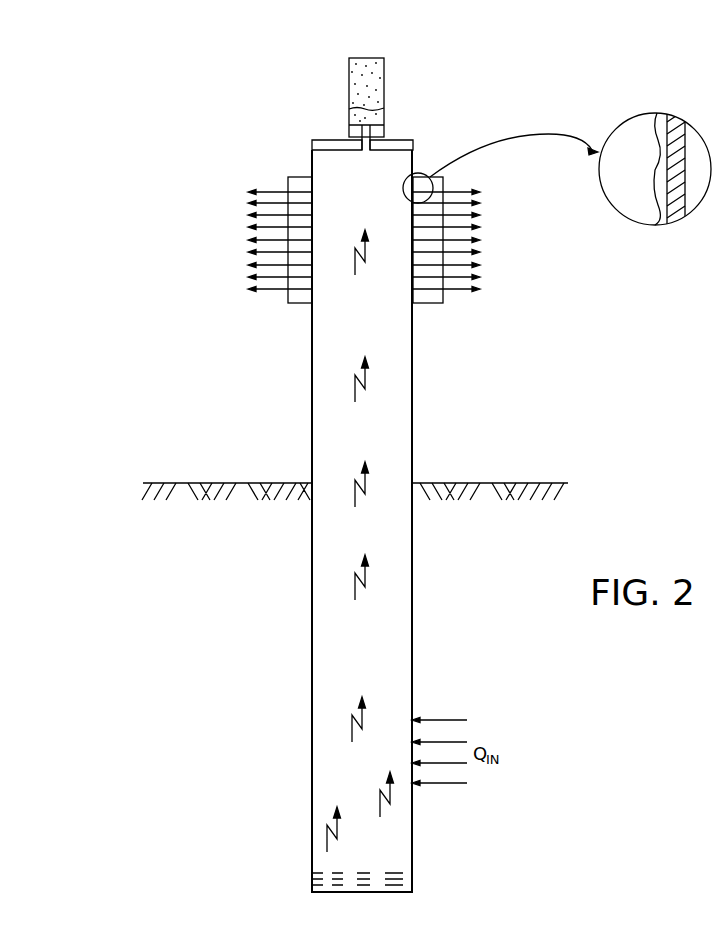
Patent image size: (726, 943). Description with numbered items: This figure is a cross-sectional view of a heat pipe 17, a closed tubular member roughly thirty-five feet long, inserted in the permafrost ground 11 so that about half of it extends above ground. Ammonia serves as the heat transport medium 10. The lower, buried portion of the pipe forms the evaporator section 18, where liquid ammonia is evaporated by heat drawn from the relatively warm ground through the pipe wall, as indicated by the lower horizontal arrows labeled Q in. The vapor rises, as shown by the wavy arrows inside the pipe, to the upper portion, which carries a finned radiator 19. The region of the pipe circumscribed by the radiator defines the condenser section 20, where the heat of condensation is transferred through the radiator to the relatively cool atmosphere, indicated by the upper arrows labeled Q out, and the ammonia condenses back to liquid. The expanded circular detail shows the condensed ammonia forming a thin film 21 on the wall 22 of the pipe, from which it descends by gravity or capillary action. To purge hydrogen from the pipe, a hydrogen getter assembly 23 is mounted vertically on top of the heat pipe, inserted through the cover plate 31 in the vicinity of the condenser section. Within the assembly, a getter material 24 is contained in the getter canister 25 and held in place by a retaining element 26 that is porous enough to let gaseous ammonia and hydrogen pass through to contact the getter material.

The heat transport medium 10 is at (412, 881).
The permafrost ground 11 is at (456, 483).
The heat pipe 17 is at (413, 158).
The evaporator section 18 is at (278, 512).
The finned radiator 19 is at (297, 177).
The condenser section 20 is at (235, 183).
The thin film 21 is at (656, 118).
The wall 22 is at (685, 120).
The hydrogen getter assembly 23 is at (367, 97).
The getter material 24 is at (374, 70).
The getter canister 25 is at (385, 85).
The retaining element 26 is at (378, 117).
The cover plate 31 is at (330, 140).